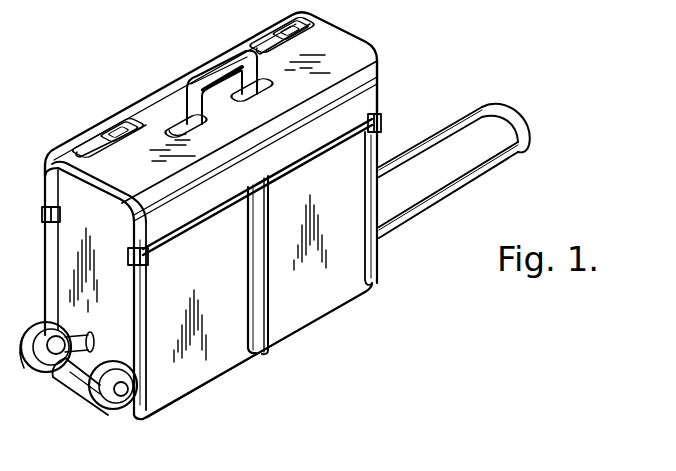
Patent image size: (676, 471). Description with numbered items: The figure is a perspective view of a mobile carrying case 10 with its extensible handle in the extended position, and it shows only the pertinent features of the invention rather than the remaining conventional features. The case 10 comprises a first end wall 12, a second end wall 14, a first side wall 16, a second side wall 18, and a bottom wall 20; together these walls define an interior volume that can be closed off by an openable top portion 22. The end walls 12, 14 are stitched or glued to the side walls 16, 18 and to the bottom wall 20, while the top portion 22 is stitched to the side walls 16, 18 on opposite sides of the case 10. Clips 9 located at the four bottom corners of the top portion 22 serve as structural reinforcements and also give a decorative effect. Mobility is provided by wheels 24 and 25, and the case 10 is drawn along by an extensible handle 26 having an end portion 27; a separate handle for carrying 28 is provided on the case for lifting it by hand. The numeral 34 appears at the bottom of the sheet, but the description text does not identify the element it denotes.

The clips 9 is at (44, 213).
The mobile carrying case 10 is at (95, 64).
The first end wall 12 is at (72, 188).
The second end wall 14 is at (411, 127).
The first side wall 16 is at (186, 362).
The second side wall 18 is at (160, 68).
The bottom wall 20 is at (303, 333).
The openable top portion 22 is at (305, 0).
The wheel 24 is at (28, 368).
The wheel 25 is at (98, 398).
The extensible handle 26 is at (455, 122).
The end portion 27 is at (517, 122).
The handle for carrying 28 is at (227, 70).
The bottom wall 34 is at (256, 381).